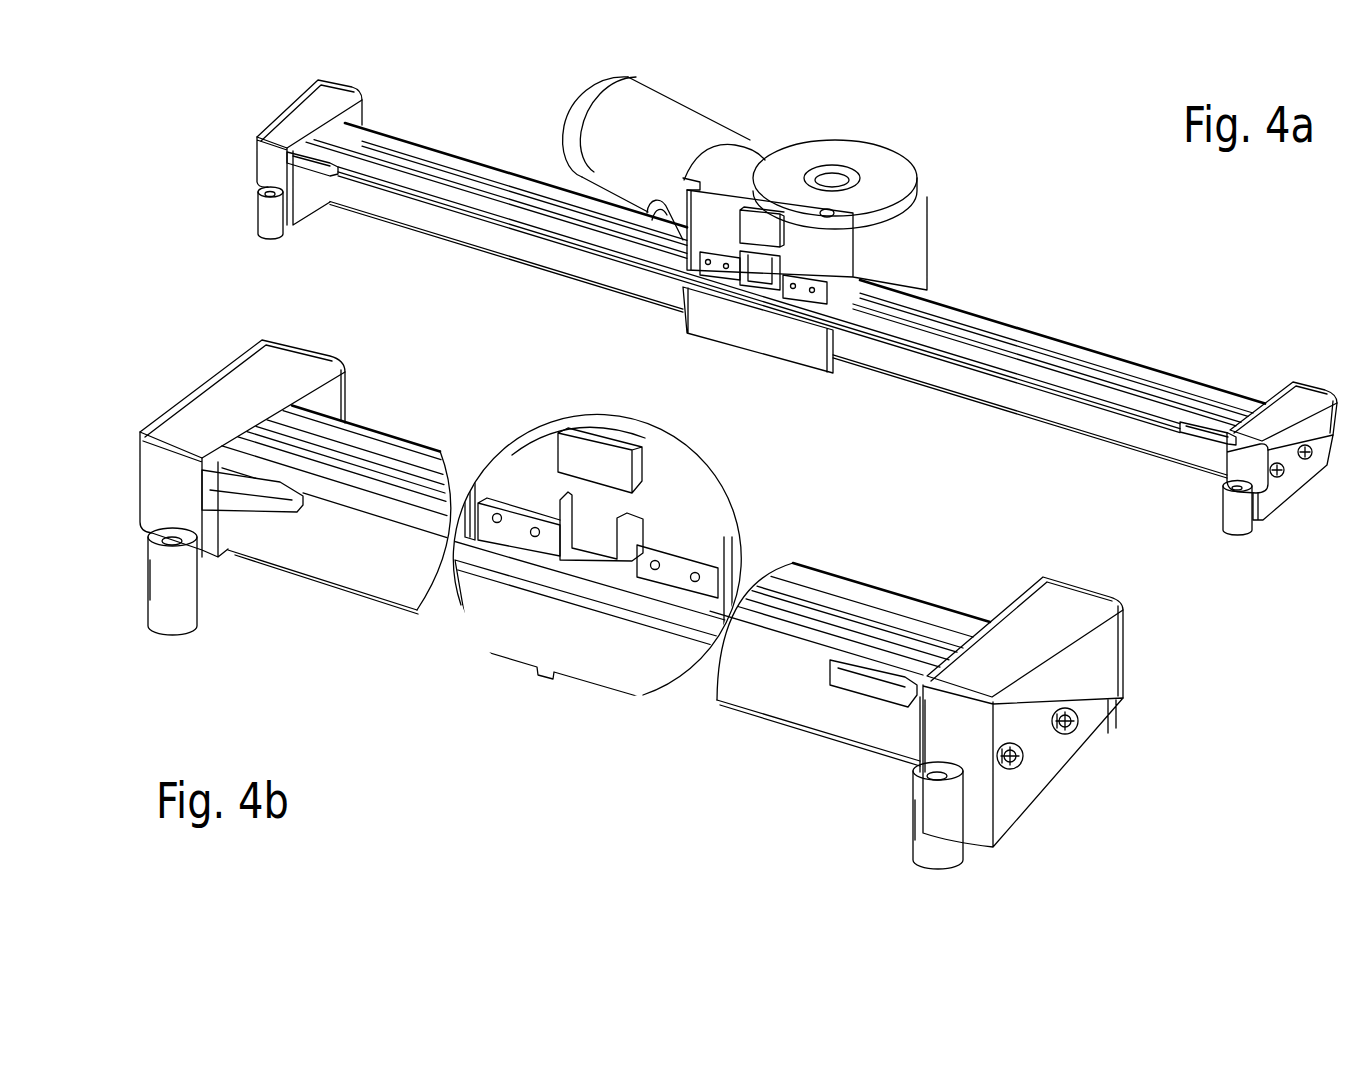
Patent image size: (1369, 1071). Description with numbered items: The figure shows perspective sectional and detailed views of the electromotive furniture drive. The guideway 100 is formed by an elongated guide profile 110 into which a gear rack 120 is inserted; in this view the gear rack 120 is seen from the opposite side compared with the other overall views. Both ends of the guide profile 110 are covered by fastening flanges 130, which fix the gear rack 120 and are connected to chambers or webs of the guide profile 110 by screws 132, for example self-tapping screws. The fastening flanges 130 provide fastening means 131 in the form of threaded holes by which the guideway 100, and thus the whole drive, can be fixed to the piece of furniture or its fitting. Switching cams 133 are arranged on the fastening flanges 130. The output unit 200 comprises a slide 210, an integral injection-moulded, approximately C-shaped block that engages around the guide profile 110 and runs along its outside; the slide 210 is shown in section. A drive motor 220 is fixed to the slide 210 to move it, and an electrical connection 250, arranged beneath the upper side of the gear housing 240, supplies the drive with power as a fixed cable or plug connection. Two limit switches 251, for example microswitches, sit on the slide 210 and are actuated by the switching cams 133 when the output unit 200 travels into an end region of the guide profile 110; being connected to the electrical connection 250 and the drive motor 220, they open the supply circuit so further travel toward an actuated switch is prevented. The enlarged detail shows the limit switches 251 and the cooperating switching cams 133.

In FIG. 4A, the guideway 100 is at (1195, 335).
In FIG. 4A, the guide profile 110 is at (1088, 418).
In FIG. 4A, the gear rack 120 is at (1012, 322).
In FIG. 4B, the gear rack 120 is at (890, 578).
In FIG. 4A, the fastening flanges 130 is at (318, 103).
In FIG. 4B, the fastening flanges 130 is at (202, 425).
In FIG. 4B, the fastening means 131 is at (167, 613).
In FIG. 4B, the screws 132 is at (1070, 727).
In FIG. 4A, the switching cams 133 is at (318, 160).
In FIG. 4B, the switching cams 133 is at (268, 498).
In FIG. 4A, the output unit 200 is at (958, 142).
In FIG. 4A, the slide 210 is at (903, 263).
In FIG. 4A, the drive motor 220 is at (628, 123).
In FIG. 4A, the gear housing 240 is at (882, 177).
In FIG. 4A, the electrical connection 250 is at (758, 225).
In FIG. 4B, the electrical connection 250 is at (590, 448).
In FIG. 4A, the limit switches 251 is at (795, 293).
In FIG. 4B, the limit switches 251 is at (653, 580).